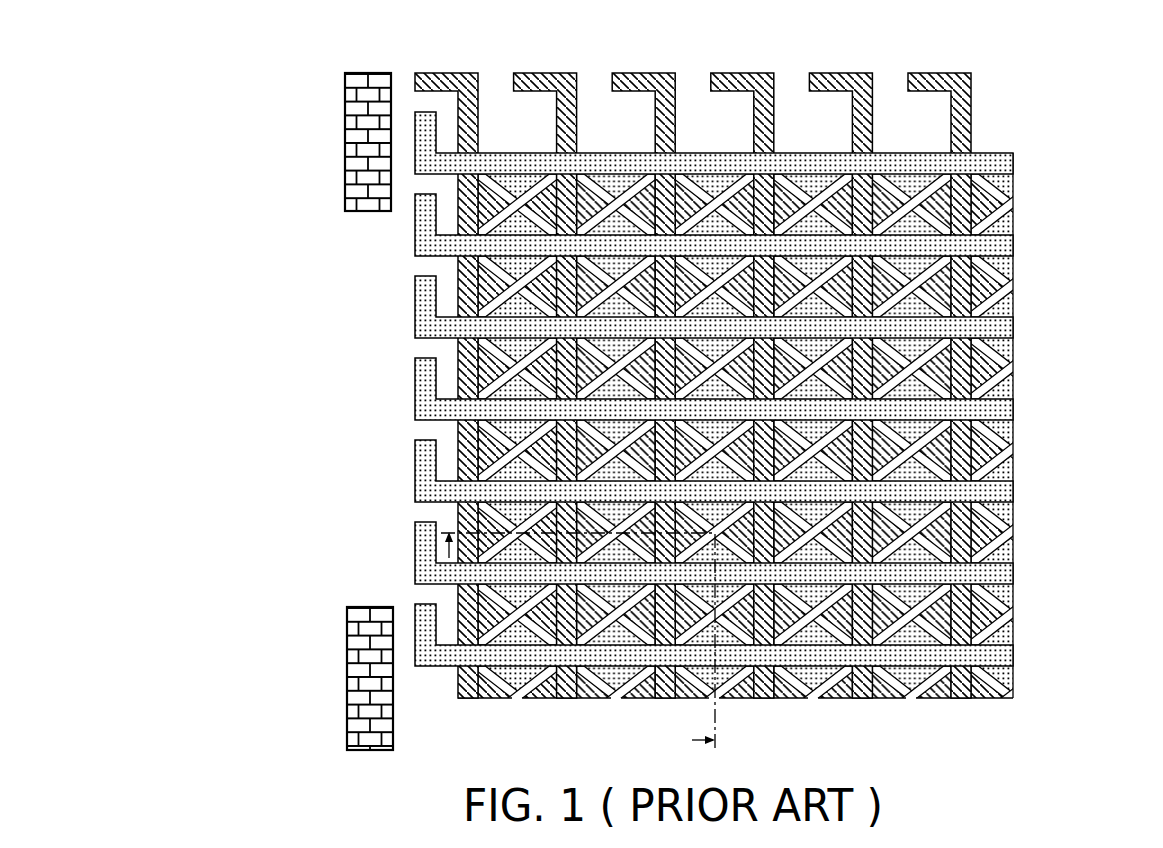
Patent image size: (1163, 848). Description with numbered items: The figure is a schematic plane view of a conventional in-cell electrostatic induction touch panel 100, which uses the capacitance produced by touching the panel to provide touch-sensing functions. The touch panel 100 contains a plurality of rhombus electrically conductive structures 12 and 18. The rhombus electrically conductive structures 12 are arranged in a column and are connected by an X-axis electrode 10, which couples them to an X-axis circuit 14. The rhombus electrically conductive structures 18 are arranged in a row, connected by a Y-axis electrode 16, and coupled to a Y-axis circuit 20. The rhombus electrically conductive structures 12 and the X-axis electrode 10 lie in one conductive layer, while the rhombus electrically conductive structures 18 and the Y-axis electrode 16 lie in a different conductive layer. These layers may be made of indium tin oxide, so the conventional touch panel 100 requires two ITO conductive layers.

The electrostatic induction touch panel 100 is at (1082, 96).
The X-axis electrode 10 is at (543, 67).
The rhombus electrically conductive structures 12 is at (592, 617).
The X-axis circuit 14 is at (345, 108).
The Y-axis electrode 16 is at (413, 382).
The rhombus electrically conductive structures 18 is at (512, 672).
The Y-axis circuit 20 is at (345, 657).